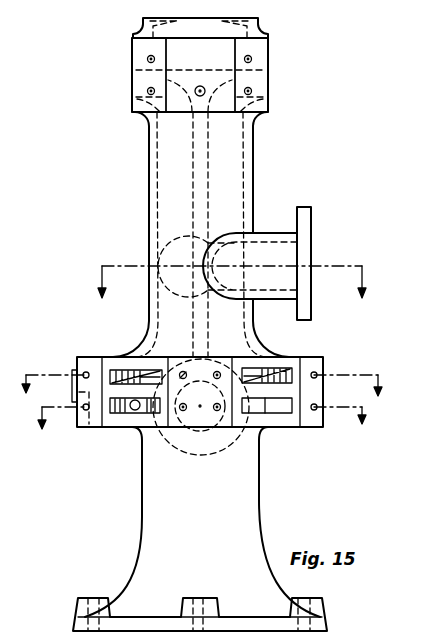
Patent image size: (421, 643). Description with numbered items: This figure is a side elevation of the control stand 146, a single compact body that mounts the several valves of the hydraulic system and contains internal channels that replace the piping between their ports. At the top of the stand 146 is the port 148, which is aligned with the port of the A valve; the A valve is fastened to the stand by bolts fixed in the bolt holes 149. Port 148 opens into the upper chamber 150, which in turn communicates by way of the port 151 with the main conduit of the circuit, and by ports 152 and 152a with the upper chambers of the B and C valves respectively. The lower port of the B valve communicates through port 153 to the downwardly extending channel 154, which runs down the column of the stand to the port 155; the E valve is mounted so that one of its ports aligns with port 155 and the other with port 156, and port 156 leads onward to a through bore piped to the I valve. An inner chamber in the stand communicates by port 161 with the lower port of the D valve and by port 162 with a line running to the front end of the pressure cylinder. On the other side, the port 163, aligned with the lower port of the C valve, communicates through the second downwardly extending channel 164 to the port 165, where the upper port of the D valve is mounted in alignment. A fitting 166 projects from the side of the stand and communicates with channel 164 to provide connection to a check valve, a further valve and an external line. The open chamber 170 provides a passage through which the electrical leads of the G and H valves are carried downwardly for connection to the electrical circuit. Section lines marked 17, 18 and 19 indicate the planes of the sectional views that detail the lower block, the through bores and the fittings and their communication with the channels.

The stand 146 is at (250, 490).
The port 148 is at (203, 89).
The bolt holes 149 is at (148, 57).
The upper chamber 150 is at (242, 19).
The port 151 is at (150, 21).
The port 152 is at (138, 68).
The port 152a is at (268, 68).
The port 153 is at (134, 99).
The downwardly extending channel 154 is at (172, 186).
The port 155 is at (118, 376).
The port 156 is at (148, 410).
The port 161 is at (282, 411).
The port 162 is at (198, 432).
The port 163 is at (265, 96).
The downwardly extending channel 164 is at (233, 184).
The port 165 is at (283, 375).
The fitting 166 is at (306, 220).
The open chamber 170 is at (92, 430).
The section line 17 is at (201, 399).
The section line 18 is at (201, 432).
The section line 19 is at (231, 285).